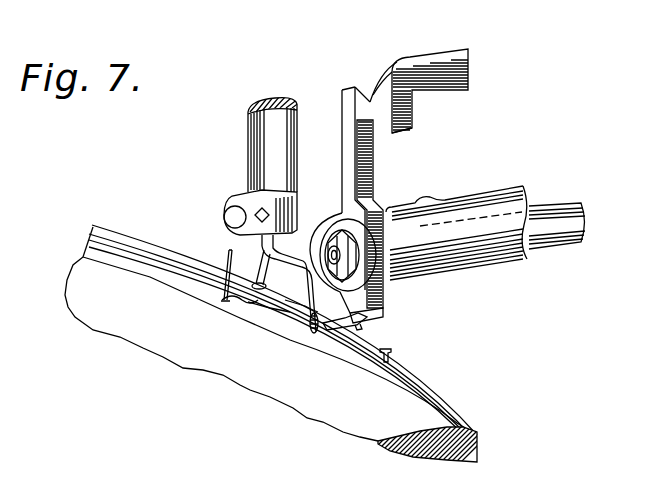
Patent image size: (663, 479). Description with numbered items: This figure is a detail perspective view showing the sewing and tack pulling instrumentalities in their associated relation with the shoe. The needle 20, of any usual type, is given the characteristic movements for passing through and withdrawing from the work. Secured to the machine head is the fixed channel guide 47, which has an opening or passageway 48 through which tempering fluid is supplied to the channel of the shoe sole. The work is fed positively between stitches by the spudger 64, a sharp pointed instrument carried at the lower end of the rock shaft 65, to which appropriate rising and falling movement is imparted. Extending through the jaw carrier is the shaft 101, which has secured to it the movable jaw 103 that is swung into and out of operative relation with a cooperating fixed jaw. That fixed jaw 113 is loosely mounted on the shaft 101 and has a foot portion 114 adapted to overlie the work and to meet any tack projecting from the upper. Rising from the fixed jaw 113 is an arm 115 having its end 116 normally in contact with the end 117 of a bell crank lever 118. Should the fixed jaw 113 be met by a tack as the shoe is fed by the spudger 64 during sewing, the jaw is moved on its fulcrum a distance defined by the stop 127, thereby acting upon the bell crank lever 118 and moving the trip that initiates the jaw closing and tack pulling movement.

The needle 20 is at (258, 268).
The channel guide 47 is at (263, 305).
The opening or passageway 48 is at (238, 298).
The spudger 64 is at (288, 305).
The rock shaft 65 is at (260, 160).
The jaw carrying shaft 101 is at (332, 256).
The movable jaw 103 is at (383, 296).
The fixed jaw 113 is at (368, 323).
The foot portion 114 is at (340, 328).
The arm 115 is at (343, 120).
The end of arm 116 is at (343, 85).
The end of bell crank lever 117 is at (392, 133).
The bell crank lever 118 is at (421, 70).
The stop 127 is at (418, 202).